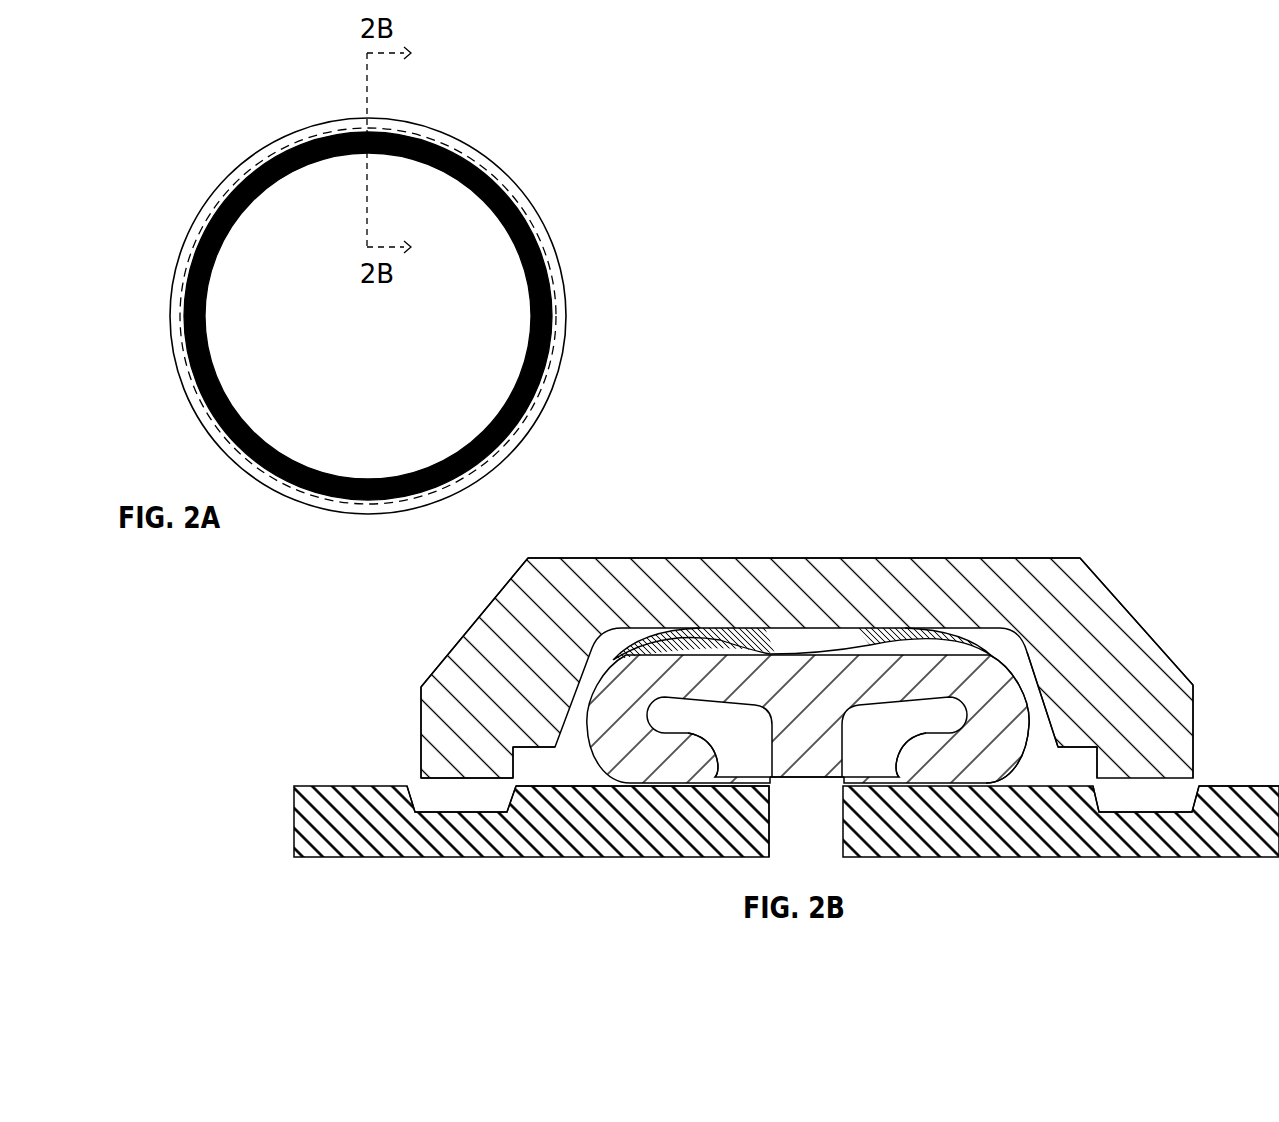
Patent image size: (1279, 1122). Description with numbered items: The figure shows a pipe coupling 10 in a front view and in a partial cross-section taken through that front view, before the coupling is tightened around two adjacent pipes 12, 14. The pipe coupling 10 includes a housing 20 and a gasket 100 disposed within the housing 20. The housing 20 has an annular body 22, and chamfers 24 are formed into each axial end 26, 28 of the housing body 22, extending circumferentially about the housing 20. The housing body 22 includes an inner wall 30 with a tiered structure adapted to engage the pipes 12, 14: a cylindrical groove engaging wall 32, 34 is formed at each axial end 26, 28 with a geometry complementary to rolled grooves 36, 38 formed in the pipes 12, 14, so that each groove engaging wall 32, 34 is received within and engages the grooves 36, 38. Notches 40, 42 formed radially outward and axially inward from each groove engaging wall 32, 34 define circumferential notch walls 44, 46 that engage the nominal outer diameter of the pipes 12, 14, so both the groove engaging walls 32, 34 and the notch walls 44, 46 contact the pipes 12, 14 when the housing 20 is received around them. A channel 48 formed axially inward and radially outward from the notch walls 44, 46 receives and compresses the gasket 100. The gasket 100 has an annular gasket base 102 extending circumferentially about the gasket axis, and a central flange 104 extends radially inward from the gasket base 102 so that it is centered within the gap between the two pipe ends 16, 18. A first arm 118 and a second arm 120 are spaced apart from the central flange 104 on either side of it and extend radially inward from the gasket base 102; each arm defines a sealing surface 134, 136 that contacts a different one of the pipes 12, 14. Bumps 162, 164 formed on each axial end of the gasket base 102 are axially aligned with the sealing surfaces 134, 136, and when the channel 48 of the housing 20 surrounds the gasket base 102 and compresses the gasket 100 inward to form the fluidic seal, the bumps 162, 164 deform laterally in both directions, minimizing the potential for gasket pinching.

In FIG. 2A, the pipe coupling 10 is at (530, 162).
In FIG. 2B, the pipe coupling 10 is at (915, 525).
In FIG. 2A, the pipe 12 is at (200, 248).
In FIG. 2B, the pipe 14 is at (324, 810).
In FIG. 2B, the pipe end 16 is at (855, 836).
In FIG. 2B, the pipe end 18 is at (747, 838).
In FIG. 2A, the housing 20 is at (568, 293).
In FIG. 2B, the housing 20 is at (752, 572).
In FIG. 2B, the annular body 22 is at (670, 565).
In FIG. 2B, the chamfer 24 is at (453, 652).
In FIG. 2B, the axial end 26 is at (1195, 722).
In FIG. 2B, the axial end 28 is at (419, 734).
In FIG. 2B, the inner wall 30 is at (433, 780).
In FIG. 2B, the groove engaging wall 32 is at (1198, 840).
In FIG. 2B, the groove engaging wall 34 is at (470, 780).
In FIG. 2B, the rolled groove 36 is at (1140, 822).
In FIG. 2B, the rolled groove 38 is at (482, 822).
In FIG. 2B, the notch 40 is at (1088, 778).
In FIG. 2B, the notch 42 is at (545, 776).
In FIG. 2B, the circumferential notch wall 44 is at (1080, 778).
In FIG. 2B, the circumferential notch wall 46 is at (534, 748).
In FIG. 2B, the channel 48 is at (602, 648).
In FIG. 2A, the gasket 100 is at (547, 242).
In FIG. 2B, the gasket 100 is at (982, 687).
In FIG. 2A, the gasket base 102 is at (247, 160).
In FIG. 2B, the gasket base 102 is at (783, 650).
In FIG. 2B, the central flange 104 is at (808, 748).
In FIG. 2B, the first arm 118 is at (1045, 680).
In FIG. 2B, the second arm 120 is at (603, 720).
In FIG. 2B, the sealing surface 134 is at (963, 775).
In FIG. 2B, the sealing surface 136 is at (648, 775).
In FIG. 2B, the bump 162 is at (962, 632).
In FIG. 2B, the bump 164 is at (653, 630).